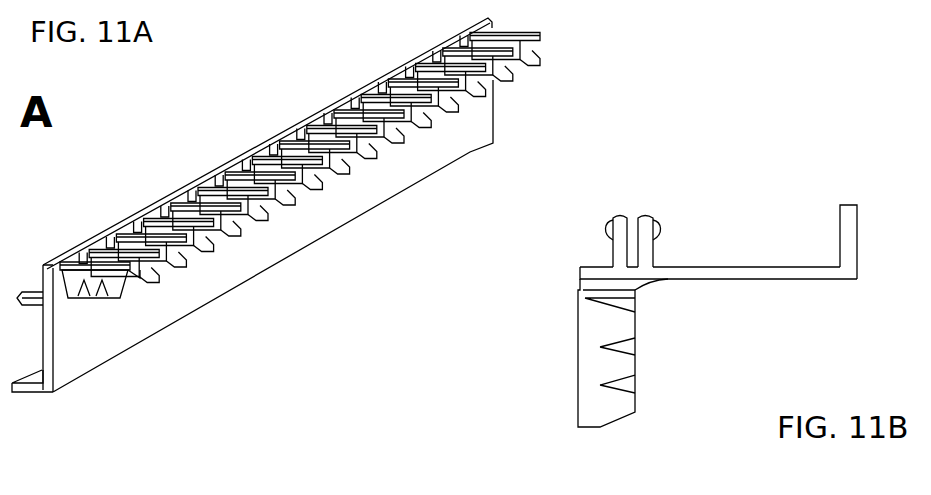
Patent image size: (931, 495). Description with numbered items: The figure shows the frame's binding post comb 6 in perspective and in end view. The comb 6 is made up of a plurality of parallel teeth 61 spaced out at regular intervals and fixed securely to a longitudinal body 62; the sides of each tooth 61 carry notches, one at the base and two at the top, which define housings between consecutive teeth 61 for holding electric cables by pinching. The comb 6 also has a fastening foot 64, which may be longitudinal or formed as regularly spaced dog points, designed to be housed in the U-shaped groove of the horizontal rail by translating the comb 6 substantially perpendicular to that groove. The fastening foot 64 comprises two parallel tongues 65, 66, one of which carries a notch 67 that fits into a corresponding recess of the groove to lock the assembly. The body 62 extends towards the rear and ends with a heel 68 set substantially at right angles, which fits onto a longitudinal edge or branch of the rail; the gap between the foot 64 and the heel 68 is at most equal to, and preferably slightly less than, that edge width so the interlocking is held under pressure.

In FIG. 11A, the binding post comb 6 is at (310, 88).
In FIG. 11A, the teeth 61 is at (155, 265).
In FIG. 11B, the teeth 61 is at (615, 402).
In FIG. 11A, the longitudinal body 62 is at (228, 272).
In FIG. 11B, the longitudinal body 62 is at (748, 272).
In FIG. 11A, the fastening foot 64 is at (36, 284).
In FIG. 11B, the fastening foot 64 is at (656, 235).
In FIG. 11B, the tongue 65 is at (648, 226).
In FIG. 11B, the tongue 66 is at (616, 226).
In FIG. 11B, the notch 67 is at (611, 238).
In FIG. 11A, the heel 68 is at (28, 392).
In FIG. 11B, the heel 68 is at (845, 225).